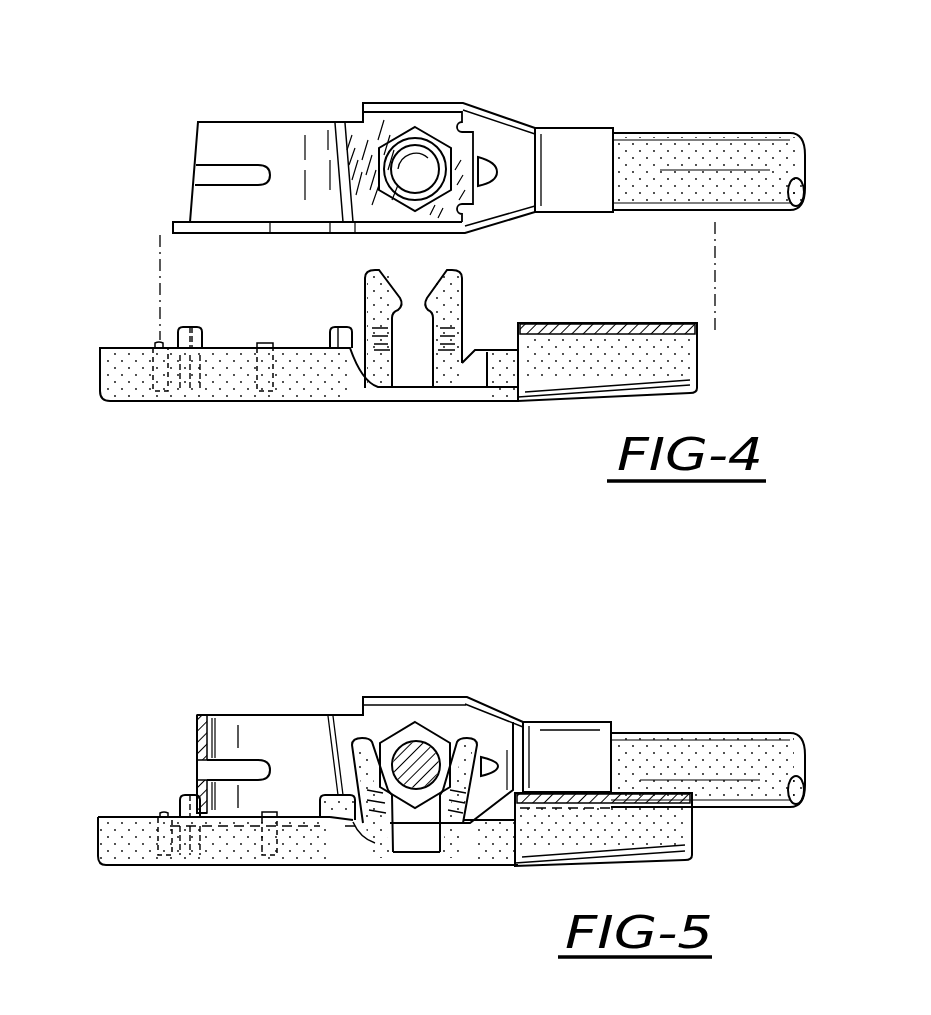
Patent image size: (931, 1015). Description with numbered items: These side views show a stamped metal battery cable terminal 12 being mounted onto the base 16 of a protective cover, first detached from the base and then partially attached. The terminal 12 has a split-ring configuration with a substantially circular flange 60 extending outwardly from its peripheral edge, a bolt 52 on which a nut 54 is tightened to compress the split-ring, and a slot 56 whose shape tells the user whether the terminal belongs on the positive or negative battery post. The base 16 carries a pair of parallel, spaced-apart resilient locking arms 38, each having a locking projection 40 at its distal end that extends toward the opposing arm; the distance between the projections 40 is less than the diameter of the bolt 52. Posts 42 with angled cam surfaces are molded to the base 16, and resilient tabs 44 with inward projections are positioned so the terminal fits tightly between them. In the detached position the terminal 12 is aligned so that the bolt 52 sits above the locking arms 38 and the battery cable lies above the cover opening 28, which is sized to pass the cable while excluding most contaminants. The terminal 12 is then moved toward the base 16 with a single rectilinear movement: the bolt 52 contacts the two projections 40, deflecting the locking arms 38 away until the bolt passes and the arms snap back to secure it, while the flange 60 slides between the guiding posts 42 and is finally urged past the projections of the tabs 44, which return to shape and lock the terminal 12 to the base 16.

In FIG. 4, the battery cable terminal 12 is at (516, 113).
In FIG. 5, the battery cable terminal 12 is at (354, 703).
In FIG. 4, the base 16 is at (185, 402).
In FIG. 5, the base 16 is at (192, 866).
In FIG. 4, the opening 28 is at (703, 363).
In FIG. 5, the opening 28 is at (603, 829).
In FIG. 4, the resilient locking arms 38 is at (380, 360).
In FIG. 5, the resilient locking arms 38 is at (385, 835).
In FIG. 4, the locking projections 40 is at (400, 300).
In FIG. 4, the posts 42 is at (322, 330).
In FIG. 5, the posts 42 is at (180, 800).
In FIG. 4, the resilient tabs 44 is at (150, 390).
In FIG. 5, the resilient tabs 44 is at (140, 842).
In FIG. 4, the bolt 52 is at (410, 167).
In FIG. 5, the bolt 52 is at (426, 745).
In FIG. 4, the nut 54 is at (433, 152).
In FIG. 5, the nut 54 is at (445, 755).
In FIG. 4, the slot 56 is at (200, 173).
In FIG. 4, the flange 60 is at (185, 228).